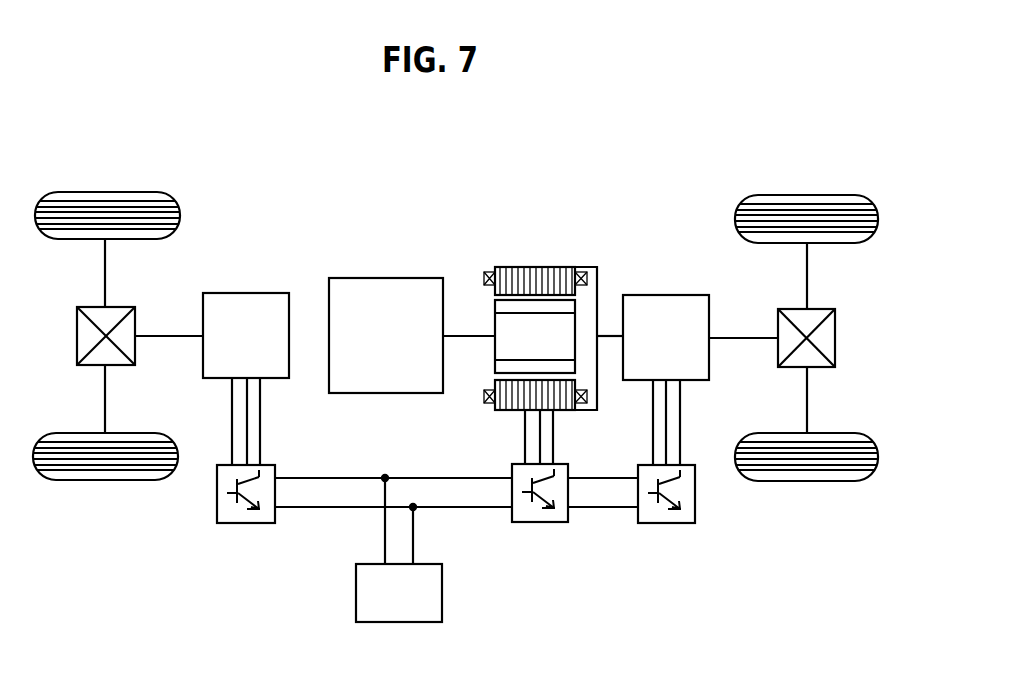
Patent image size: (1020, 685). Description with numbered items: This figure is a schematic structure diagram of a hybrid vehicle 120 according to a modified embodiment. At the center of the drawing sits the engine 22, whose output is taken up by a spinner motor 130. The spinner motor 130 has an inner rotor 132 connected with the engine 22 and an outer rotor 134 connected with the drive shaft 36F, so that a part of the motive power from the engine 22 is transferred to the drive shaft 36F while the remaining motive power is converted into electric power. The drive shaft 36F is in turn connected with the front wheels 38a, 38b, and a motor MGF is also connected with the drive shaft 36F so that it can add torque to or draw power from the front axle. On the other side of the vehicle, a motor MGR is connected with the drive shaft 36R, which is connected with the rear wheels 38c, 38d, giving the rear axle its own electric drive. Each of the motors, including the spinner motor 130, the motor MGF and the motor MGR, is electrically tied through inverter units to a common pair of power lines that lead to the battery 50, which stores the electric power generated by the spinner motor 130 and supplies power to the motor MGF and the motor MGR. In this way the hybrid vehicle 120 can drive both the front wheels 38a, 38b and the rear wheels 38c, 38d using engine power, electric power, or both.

The engine 22 is at (388, 278).
The drive shaft 36R is at (162, 334).
The drive shaft 36F is at (737, 335).
The front wheel 38a is at (807, 195).
The front wheel 38b is at (807, 482).
The rear wheel 38c is at (106, 192).
The rear wheel 38d is at (105, 480).
The battery 50 is at (442, 592).
The hybrid vehicle 120 is at (604, 166).
The spinner motor 130 is at (527, 289).
The inner rotor 132 is at (570, 211).
The outer rotor 134 is at (545, 267).
The motor MGR is at (247, 291).
The motor MGF is at (667, 293).